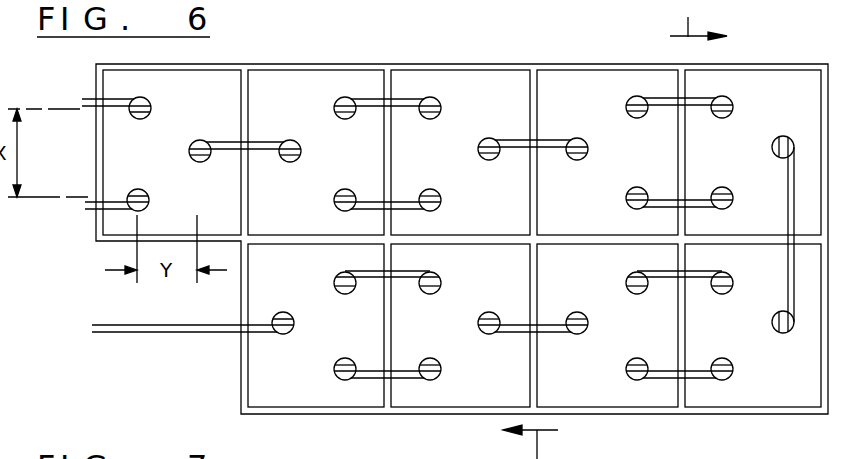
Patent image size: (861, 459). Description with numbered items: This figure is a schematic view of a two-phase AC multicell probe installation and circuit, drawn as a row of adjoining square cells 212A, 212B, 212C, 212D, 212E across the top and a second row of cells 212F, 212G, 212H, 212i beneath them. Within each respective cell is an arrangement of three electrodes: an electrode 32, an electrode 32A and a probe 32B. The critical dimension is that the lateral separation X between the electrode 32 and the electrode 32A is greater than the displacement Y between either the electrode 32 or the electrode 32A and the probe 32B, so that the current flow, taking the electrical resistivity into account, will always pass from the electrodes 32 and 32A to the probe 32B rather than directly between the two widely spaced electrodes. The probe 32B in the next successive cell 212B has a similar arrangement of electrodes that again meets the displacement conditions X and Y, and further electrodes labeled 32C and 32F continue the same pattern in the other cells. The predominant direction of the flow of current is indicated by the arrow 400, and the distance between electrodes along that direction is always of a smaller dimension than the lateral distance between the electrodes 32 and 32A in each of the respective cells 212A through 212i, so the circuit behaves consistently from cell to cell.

The electrode 32 is at (136, 201).
The electrode 32A is at (142, 107).
The probe 32B is at (202, 149).
The nozzle 32C is at (515, 80).
The nozzle 32F is at (671, 59).
The cell 212A is at (204, 108).
The cell 212B is at (364, 146).
The cell 212C is at (497, 93).
The cell 212D is at (603, 99).
The cell 212E is at (760, 96).
The cell 212F is at (766, 392).
The cell 212G is at (608, 392).
The cell 212H is at (470, 392).
The cell 212i is at (315, 393).
The arrow 400 is at (698, 20).